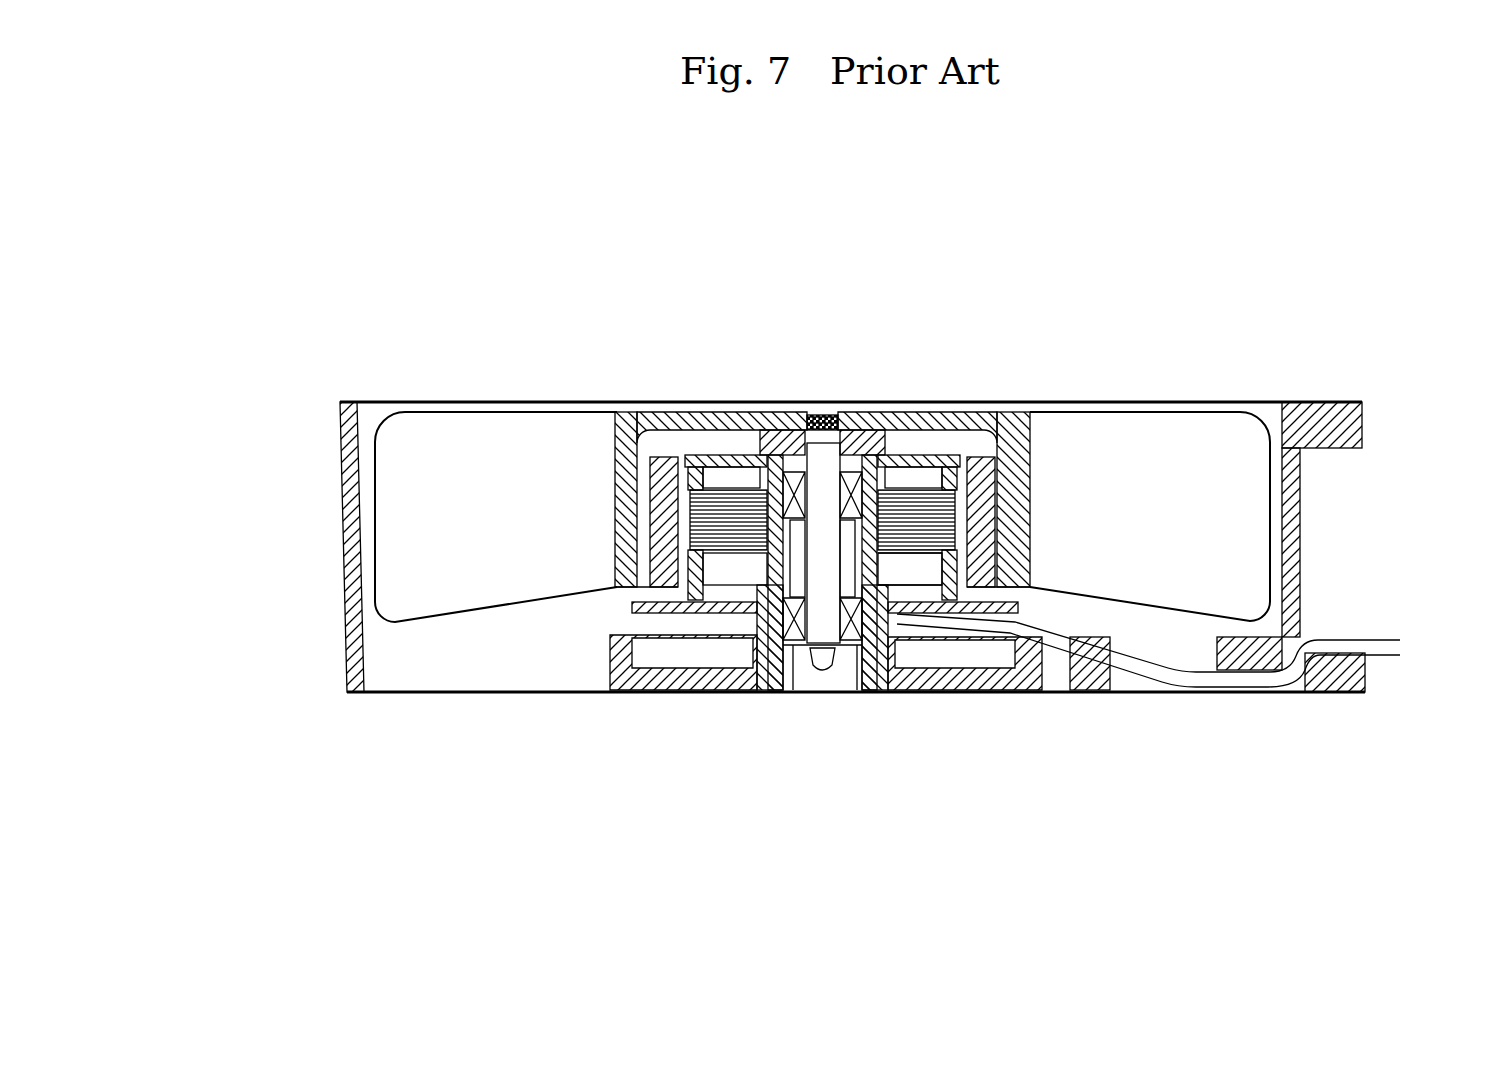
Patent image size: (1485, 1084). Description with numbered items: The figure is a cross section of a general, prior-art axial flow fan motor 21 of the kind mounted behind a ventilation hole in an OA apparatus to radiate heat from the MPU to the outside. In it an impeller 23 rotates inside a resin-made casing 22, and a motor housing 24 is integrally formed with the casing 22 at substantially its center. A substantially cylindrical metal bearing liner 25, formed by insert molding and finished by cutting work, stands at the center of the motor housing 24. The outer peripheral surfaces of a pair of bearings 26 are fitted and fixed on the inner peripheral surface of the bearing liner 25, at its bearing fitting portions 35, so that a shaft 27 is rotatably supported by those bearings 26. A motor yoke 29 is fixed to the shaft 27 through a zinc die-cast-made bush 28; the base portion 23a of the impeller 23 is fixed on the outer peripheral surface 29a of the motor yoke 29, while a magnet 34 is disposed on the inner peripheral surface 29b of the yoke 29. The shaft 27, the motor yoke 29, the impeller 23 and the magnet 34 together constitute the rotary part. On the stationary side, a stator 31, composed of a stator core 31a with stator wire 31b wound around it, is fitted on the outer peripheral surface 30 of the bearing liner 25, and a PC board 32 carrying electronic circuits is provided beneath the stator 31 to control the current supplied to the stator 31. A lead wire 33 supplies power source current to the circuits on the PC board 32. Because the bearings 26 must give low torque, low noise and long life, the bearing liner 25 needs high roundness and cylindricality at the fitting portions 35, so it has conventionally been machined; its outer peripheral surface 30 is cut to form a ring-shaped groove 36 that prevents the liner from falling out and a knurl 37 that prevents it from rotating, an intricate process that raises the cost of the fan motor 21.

The axial flow fan motor 21 is at (1040, 312).
The casing 22 is at (340, 512).
The impeller 23 is at (500, 395).
The base portion 23a is at (618, 412).
The motor housing 24 is at (598, 657).
The bearing liner 25 is at (870, 612).
The bearings 26 is at (856, 440).
The shaft 27 is at (822, 672).
The bush 28 is at (850, 415).
The motor yoke 29 is at (972, 457).
The outer peripheral surface 29a is at (1030, 470).
The inner peripheral surface 29b is at (1032, 500).
The outer peripheral surface 30 is at (725, 600).
The stator 31 is at (712, 600).
The stator core 31a is at (1033, 525).
The stator wire 31b is at (940, 605).
The PC board 32 is at (957, 617).
The lead wire 33 is at (1355, 638).
The magnet 34 is at (632, 588).
The bearing fitting portions 35 is at (790, 468).
The ring-shaped groove 36 is at (745, 602).
The knurl 37 is at (920, 575).